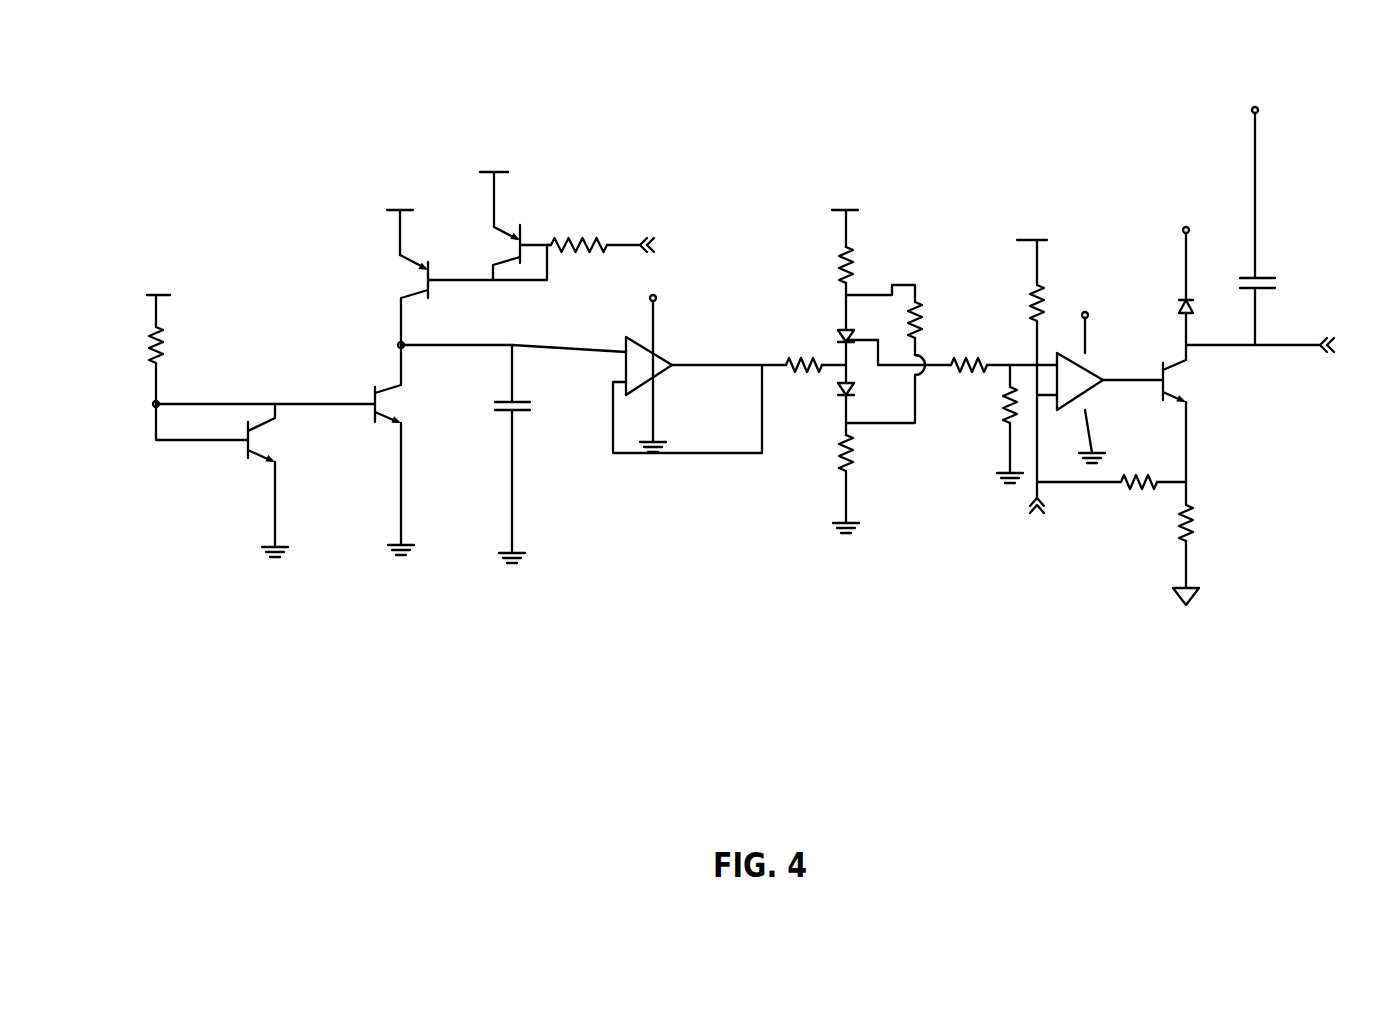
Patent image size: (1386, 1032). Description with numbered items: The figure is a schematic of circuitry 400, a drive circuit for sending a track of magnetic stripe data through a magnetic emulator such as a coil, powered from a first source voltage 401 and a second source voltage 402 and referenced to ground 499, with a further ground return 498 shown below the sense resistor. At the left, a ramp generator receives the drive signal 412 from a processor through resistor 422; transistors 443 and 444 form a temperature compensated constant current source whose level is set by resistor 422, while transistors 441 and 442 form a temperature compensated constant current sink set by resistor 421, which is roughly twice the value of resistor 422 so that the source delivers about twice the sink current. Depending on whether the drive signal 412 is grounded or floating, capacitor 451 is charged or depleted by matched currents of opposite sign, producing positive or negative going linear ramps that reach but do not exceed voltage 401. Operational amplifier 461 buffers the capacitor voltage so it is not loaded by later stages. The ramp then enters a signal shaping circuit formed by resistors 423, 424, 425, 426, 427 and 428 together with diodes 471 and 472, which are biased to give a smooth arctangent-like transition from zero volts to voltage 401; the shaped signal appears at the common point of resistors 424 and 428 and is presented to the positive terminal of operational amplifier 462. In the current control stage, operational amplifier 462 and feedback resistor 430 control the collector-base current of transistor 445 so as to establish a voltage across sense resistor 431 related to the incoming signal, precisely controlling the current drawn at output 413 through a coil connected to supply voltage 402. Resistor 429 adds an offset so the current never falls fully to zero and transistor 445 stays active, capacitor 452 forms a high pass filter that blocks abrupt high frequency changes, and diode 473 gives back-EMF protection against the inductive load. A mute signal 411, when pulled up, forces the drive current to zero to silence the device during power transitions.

The circuitry 400 is at (690, 100).
The first source voltage 401 is at (151, 296).
The second source voltage 402 is at (650, 297).
The mute signal 411 is at (1030, 503).
The drive signal 412 is at (645, 238).
The output signal 413 is at (1320, 343).
The resistor 421 is at (150, 336).
The resistor 422 is at (575, 236).
The resistor 423 is at (800, 362).
The resistor 424 is at (986, 360).
The resistor 425 is at (841, 268).
The resistor 426 is at (841, 446).
The resistor 427 is at (911, 322).
The resistor 428 is at (1005, 418).
The resistor 429 is at (1031, 301).
The feedback resistor 430 is at (1140, 488).
The sense resistor 431 is at (1240, 512).
The transistor 441 is at (246, 430).
The transistor 442 is at (373, 393).
The transistor 443 is at (416, 265).
The transistor 444 is at (513, 251).
The transistor 445 is at (1153, 388).
The capacitor 451 is at (510, 406).
The capacitor 452 is at (1246, 282).
The operational amplifier 461 is at (625, 364).
The operational amplifier 462 is at (1130, 345).
The diode 471 is at (840, 330).
The diode 472 is at (840, 386).
The diode 473 is at (1180, 309).
The second ground 498 is at (1178, 587).
The ground 499 is at (268, 547).